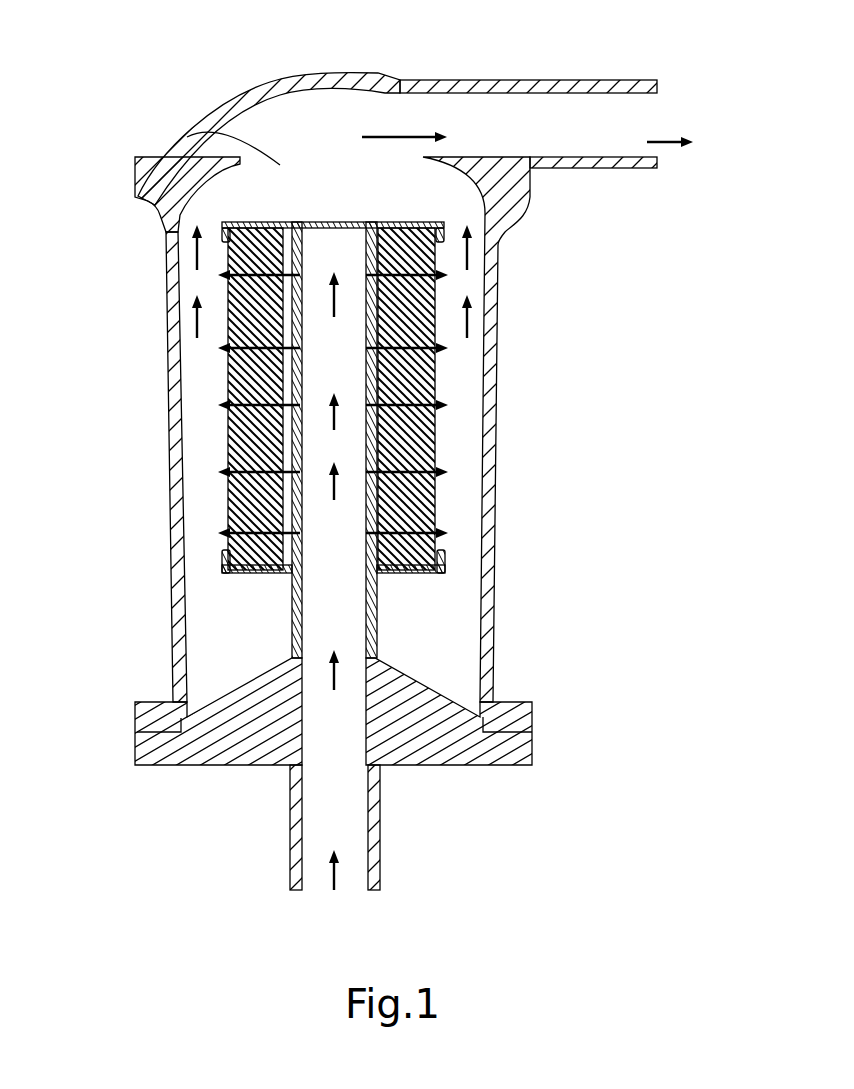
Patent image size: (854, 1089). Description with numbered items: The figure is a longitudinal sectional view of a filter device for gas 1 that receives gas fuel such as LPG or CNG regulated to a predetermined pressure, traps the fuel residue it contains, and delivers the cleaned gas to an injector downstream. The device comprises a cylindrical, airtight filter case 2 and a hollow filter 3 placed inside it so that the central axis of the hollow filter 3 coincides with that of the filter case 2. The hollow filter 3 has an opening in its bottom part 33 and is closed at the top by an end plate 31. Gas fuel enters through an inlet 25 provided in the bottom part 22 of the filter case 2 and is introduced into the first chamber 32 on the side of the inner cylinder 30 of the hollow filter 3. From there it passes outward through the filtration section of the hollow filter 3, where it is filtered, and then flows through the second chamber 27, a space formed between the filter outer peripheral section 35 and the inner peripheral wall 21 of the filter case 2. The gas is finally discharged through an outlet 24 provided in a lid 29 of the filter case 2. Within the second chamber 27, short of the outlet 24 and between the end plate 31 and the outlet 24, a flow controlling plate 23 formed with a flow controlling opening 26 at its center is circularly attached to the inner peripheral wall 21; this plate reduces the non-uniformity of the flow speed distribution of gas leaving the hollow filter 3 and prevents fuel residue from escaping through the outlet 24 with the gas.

The filter device for gas 1 is at (682, 303).
The filter case 2 is at (153, 332).
The hollow filter 3 is at (440, 372).
The inner peripheral wall 21 is at (462, 622).
The bottom part 22 is at (250, 765).
The flow controlling plate 23 is at (427, 160).
The outlet 24 is at (635, 121).
The inlet 25 is at (345, 855).
The flow controlling opening 26 is at (185, 140).
The second chamber 27 is at (213, 517).
The lid 29 is at (208, 90).
The inner cylinder 30 is at (362, 512).
The end plate 31 is at (400, 220).
The first chamber 32 is at (305, 578).
The bottom part 33 is at (383, 572).
The filter outer peripheral section 35 is at (240, 433).